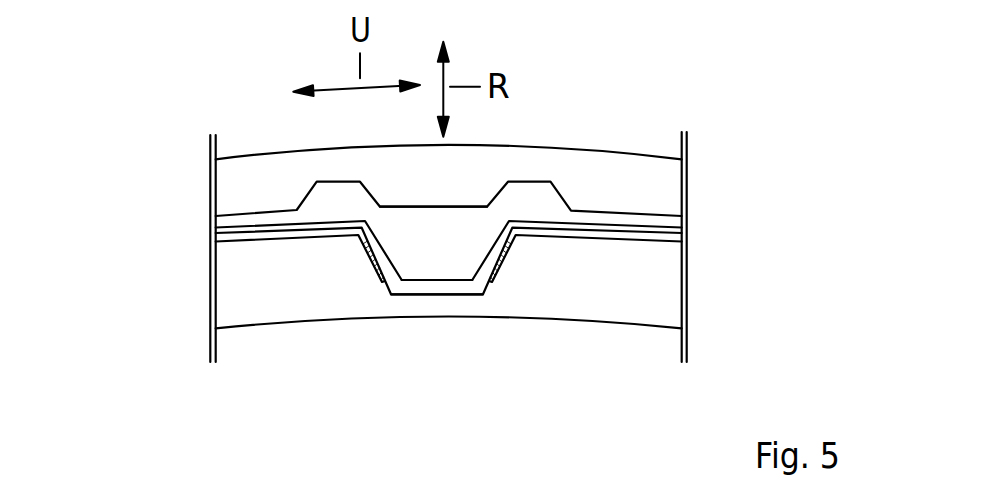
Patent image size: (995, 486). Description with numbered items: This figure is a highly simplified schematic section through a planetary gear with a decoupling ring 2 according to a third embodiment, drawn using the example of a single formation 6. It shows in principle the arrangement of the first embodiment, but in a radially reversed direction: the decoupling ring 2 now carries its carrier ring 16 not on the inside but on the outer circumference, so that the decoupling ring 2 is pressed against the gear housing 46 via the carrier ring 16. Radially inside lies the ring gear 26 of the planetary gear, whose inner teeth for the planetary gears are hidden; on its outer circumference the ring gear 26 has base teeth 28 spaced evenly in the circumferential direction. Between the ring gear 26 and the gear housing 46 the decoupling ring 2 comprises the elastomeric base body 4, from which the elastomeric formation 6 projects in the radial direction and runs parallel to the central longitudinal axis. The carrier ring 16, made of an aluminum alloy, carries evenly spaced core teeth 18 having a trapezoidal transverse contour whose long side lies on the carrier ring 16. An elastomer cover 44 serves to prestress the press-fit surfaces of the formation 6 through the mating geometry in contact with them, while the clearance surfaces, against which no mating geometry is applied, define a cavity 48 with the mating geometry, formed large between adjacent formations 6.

The decoupling ring 2 is at (703, 230).
The elastomeric base body 4 is at (216, 233).
The elastomeric formation 6 is at (459, 294).
The carrier ring 16 is at (532, 182).
The core tooth 18 is at (415, 280).
The ring gear 26 is at (675, 291).
The base tooth 28 is at (448, 207).
The elastomer cover 44 is at (373, 283).
The gear housing 46 is at (675, 185).
The cavity 48 is at (216, 243).